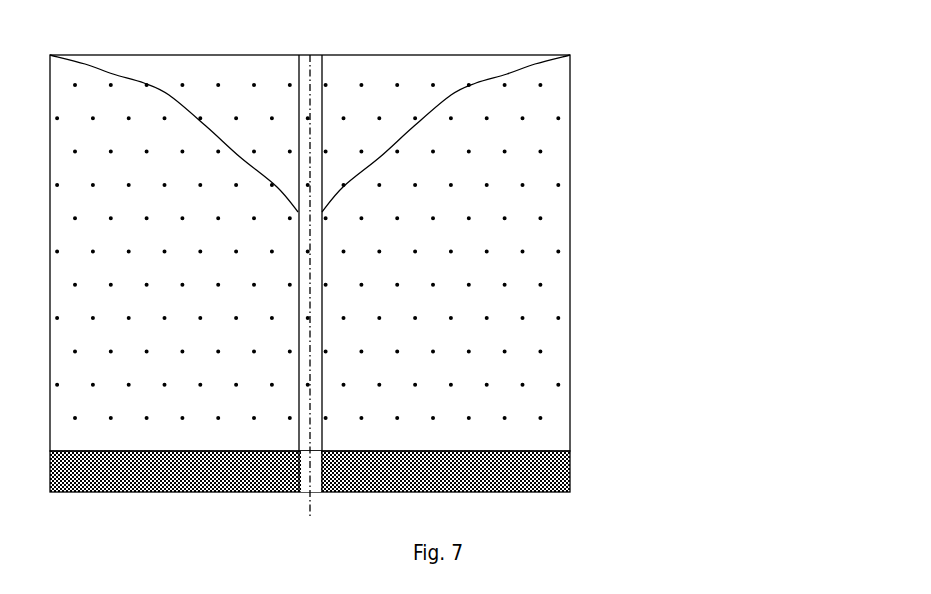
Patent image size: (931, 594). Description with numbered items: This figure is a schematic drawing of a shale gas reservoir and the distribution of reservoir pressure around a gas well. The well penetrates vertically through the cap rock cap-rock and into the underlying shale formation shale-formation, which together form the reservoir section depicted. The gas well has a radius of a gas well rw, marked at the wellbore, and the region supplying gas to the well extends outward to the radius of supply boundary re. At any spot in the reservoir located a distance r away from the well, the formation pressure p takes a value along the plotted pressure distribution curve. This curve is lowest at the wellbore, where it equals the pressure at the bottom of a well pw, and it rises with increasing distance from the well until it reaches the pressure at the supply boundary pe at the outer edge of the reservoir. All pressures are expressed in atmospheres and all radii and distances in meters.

The pressure at the supply boundary pe is at (50, 517).
The pressure at the bottom of a well pw is at (299, 213).
The formation pressure p is at (451, 517).
The radius of a gas well rw is at (287, 397).
The radius of supply boundary re is at (310, 507).
The distance of any spot in the reservoir away from a well r is at (451, 507).
The cap rock cap-rock is at (577, 263).
The shale formation shale-formation is at (577, 472).